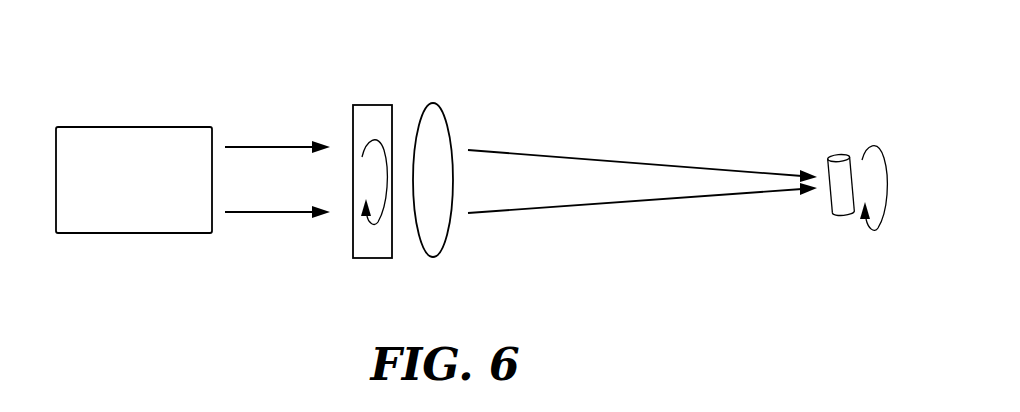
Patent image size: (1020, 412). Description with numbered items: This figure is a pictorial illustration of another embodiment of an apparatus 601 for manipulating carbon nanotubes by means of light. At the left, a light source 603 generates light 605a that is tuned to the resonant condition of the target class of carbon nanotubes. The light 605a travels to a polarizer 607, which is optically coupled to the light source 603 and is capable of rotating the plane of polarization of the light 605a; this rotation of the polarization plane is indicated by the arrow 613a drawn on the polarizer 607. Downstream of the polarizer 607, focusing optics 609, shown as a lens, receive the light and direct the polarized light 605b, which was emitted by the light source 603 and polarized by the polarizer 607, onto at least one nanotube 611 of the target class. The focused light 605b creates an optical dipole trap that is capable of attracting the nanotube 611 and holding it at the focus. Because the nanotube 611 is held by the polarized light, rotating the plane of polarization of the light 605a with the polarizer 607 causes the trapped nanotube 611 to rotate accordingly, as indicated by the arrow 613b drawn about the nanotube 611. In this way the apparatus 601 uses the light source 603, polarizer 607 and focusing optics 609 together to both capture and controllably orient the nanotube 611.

The apparatus 601 is at (580, 88).
The light source 603 is at (130, 233).
The light 605a is at (247, 148).
The light 605b is at (478, 150).
The polarizer 607 is at (368, 258).
The focusing optics 609 is at (436, 257).
The nanotube 611 is at (835, 218).
The arrow 613a is at (378, 142).
The arrow 613b is at (870, 142).